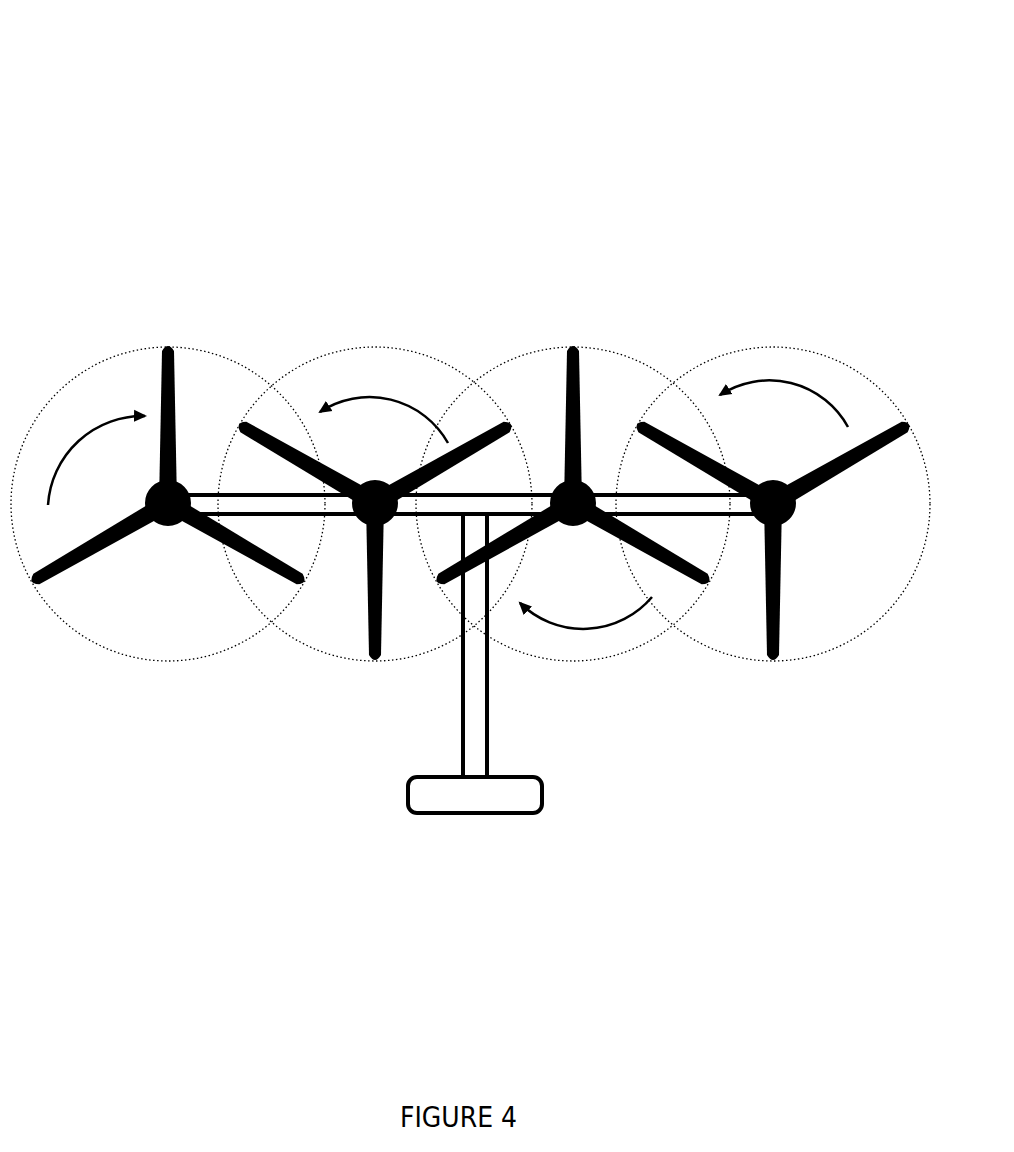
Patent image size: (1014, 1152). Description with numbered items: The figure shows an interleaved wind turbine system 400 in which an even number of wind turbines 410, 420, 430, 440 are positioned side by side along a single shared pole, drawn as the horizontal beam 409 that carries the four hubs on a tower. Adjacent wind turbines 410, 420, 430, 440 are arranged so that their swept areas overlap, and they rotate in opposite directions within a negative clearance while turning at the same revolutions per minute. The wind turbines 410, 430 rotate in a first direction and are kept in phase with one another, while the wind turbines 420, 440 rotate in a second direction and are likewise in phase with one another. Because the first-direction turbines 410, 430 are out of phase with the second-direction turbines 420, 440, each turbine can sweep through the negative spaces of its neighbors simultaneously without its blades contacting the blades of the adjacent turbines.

The interleaved wind turbine system 400 is at (168, 97).
The horizontal support beam 409 is at (267, 497).
The wind turbine 410 is at (170, 495).
The wind turbine 420 is at (373, 503).
The wind turbine 430 is at (570, 500).
The wind turbine 440 is at (773, 493).